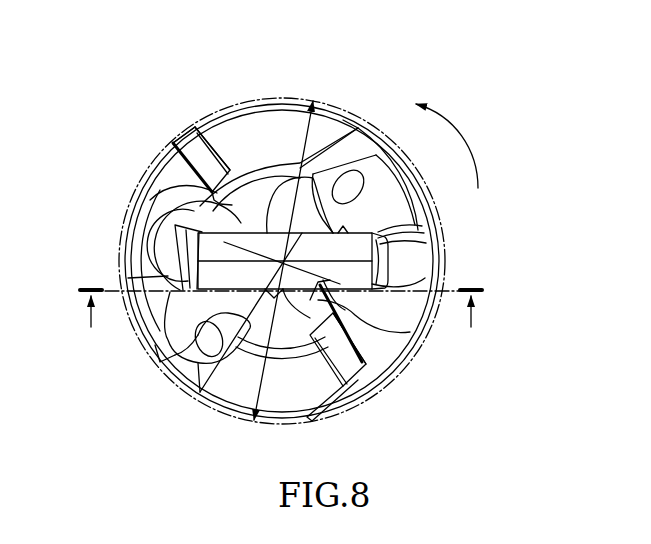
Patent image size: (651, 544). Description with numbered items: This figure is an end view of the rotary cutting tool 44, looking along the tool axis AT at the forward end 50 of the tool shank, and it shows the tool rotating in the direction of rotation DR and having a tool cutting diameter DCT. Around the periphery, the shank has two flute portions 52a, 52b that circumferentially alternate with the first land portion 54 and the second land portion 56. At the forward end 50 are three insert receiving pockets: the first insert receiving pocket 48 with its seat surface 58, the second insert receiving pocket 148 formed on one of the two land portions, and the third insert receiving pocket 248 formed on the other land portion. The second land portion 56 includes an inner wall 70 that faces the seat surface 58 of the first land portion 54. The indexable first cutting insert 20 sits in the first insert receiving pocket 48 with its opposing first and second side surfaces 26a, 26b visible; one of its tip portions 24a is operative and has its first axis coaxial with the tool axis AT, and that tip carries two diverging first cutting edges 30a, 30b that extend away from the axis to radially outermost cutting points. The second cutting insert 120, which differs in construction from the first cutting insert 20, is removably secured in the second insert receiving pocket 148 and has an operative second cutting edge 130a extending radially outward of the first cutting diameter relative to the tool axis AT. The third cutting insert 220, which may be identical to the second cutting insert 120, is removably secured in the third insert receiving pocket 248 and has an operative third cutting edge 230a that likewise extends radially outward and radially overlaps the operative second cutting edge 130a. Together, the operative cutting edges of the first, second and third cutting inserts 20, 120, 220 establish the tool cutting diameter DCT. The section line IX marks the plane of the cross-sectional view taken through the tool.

The rotary cutting tool 44 is at (367, 101).
The first land portion 54 is at (261, 99).
The forward end 50 is at (276, 149).
The second land portion 56 is at (261, 421).
The inner wall 70 is at (301, 280).
The tool cutting diameter DCT is at (299, 233).
The tip portion 24a is at (226, 238).
The tool axis AT is at (346, 261).
The seat surface 58 is at (172, 242).
The first cutting insert 20 is at (362, 277).
The first cutting edge 30a is at (307, 205).
The first cutting edge 30b is at (198, 303).
The third cutting insert 220 is at (180, 173).
The third insert receiving pocket 248 is at (200, 141).
The third cutting edge 230a is at (202, 167).
The first side surface 26a is at (175, 205).
The flute portion 52b is at (371, 197).
The direction of rotation DR is at (456, 163).
The second cutting insert 120 is at (339, 347).
The second cutting edge 130a is at (336, 366).
The second insert receiving pocket 148 is at (347, 400).
The second side surface 26b is at (395, 305).
The flute portion 52a is at (158, 310).
The first insert receiving pocket 48 is at (157, 363).
The section line IX is at (103, 351).